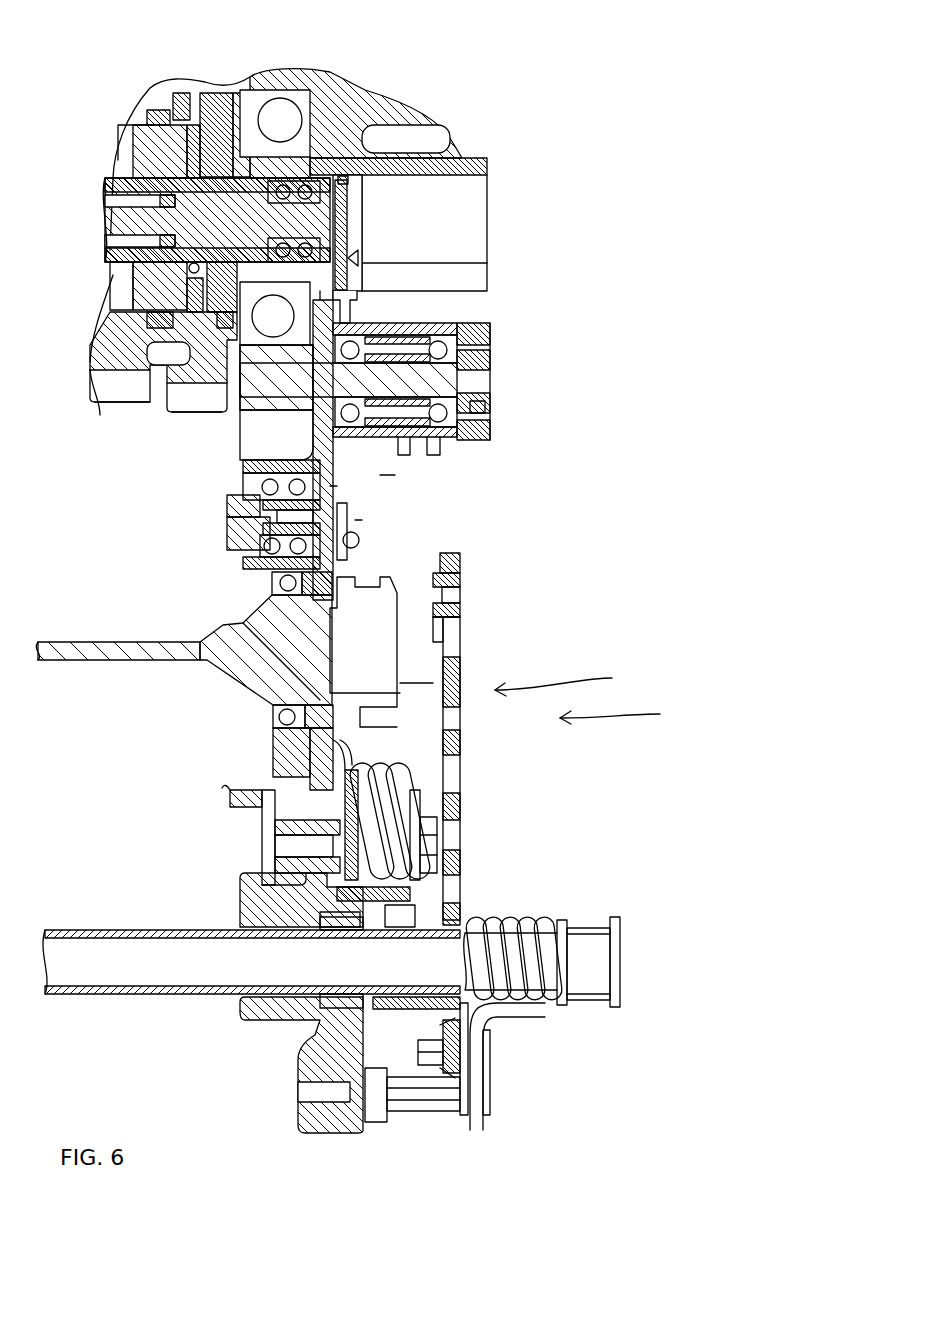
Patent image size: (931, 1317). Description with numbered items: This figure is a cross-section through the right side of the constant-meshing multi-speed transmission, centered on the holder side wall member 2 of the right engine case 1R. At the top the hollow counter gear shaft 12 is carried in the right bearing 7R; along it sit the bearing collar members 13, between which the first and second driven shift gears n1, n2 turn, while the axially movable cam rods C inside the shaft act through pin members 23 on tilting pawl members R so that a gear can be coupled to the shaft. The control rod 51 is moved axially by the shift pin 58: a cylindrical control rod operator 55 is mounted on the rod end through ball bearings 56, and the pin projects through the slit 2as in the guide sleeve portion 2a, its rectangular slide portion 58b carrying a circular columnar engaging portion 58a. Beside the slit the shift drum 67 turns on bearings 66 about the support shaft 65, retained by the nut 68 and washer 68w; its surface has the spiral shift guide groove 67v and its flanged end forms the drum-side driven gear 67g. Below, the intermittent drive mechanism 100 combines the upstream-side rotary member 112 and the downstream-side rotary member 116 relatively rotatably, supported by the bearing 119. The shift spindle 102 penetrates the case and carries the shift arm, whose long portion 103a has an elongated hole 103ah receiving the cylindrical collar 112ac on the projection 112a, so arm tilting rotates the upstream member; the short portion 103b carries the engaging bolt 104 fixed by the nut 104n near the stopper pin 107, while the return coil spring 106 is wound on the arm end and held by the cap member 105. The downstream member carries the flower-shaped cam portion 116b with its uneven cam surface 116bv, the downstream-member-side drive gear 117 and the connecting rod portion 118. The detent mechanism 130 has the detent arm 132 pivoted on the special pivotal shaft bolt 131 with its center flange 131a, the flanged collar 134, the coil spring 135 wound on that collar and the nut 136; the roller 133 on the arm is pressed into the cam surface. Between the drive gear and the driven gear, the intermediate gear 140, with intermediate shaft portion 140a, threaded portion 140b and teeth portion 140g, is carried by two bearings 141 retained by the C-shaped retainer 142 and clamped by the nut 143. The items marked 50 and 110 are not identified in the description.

The counter gear shaft 12 is at (167, 137).
The tilting pawl member R is at (200, 130).
The pin member 23 is at (248, 82).
The right bearing 7R is at (282, 108).
The bearing collar member 13 is at (150, 115).
The cam rod C is at (113, 185).
The control rod 51 is at (113, 218).
The ball bearings 56 is at (290, 183).
The guide sleeve portion 2a is at (468, 158).
The control rod operator 55 is at (345, 182).
The shift pin 58 is at (355, 218).
The slide portion 58b is at (357, 258).
The drum-side driven gear 67g is at (338, 300).
The slit 2as is at (447, 282).
The circular columnar engaging portion 58a is at (352, 318).
The shift drum 67 is at (455, 325).
The bearings 66 is at (480, 343).
The nut 68 is at (480, 405).
The washer 68w is at (485, 414).
The shift guide groove 67v is at (416, 462).
The detent mechanism 130 is at (380, 475).
The second driven shift gear n2 is at (115, 402).
The first driven shift gear n1 is at (170, 412).
The support shaft 65 is at (258, 425).
The holder side wall member 2 is at (313, 448).
The C-shaped retainer 142 is at (258, 463).
The bearings 141 is at (262, 487).
The nut 143 is at (235, 503).
The intermediate gear 140 is at (214, 534).
The threaded portion 140b is at (240, 520).
The intermediate shaft portion 140a is at (263, 548).
The bearing 119 is at (272, 583).
The downstream-side rotary member 116 is at (252, 618).
The connecting rod portion 118 is at (92, 660).
The teeth portion 140g is at (333, 486).
The detent arm 132 is at (362, 520).
The roller 133 is at (343, 510).
The flower-shaped cam portion 116b is at (357, 552).
The projection 112a is at (462, 590).
The cylindrical collar 112ac is at (462, 617).
The elongated hole 103ah is at (566, 666).
The intermittent drive mechanism 100 is at (577, 680).
The direction 50 is at (628, 712).
The upstream-side rotary member 112 is at (390, 693).
The gap 110 is at (407, 716).
The long portion 103a is at (462, 780).
The coil spring 135 is at (400, 835).
The nut 136 is at (440, 870).
The downstream-member-side drive gear 117 is at (300, 750).
The uneven cam surface 116bv is at (345, 790).
The center flange 131a is at (253, 822).
The special pivotal shaft bolt 131 is at (285, 850).
The flanged collar 134 is at (260, 893).
The shift spindle 102 is at (110, 994).
The right engine case 1R is at (265, 1020).
The nut 104n is at (430, 1062).
The return coil spring 106 is at (537, 1020).
The cap member 105 is at (598, 1005).
The engaging bolt 104 is at (490, 1062).
The stopper pin 107 is at (410, 1112).
The short portion 103b is at (455, 1095).